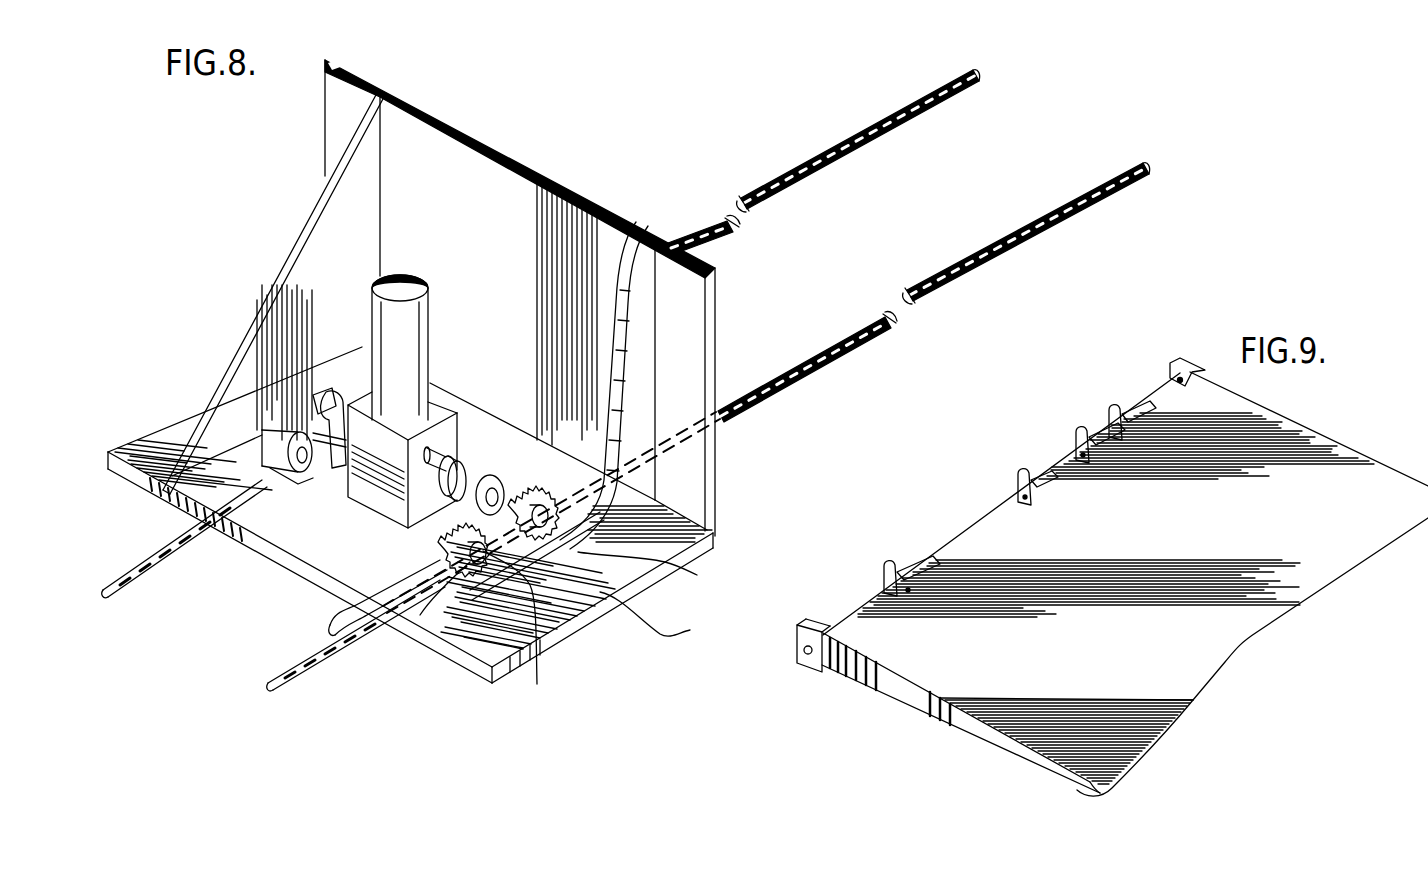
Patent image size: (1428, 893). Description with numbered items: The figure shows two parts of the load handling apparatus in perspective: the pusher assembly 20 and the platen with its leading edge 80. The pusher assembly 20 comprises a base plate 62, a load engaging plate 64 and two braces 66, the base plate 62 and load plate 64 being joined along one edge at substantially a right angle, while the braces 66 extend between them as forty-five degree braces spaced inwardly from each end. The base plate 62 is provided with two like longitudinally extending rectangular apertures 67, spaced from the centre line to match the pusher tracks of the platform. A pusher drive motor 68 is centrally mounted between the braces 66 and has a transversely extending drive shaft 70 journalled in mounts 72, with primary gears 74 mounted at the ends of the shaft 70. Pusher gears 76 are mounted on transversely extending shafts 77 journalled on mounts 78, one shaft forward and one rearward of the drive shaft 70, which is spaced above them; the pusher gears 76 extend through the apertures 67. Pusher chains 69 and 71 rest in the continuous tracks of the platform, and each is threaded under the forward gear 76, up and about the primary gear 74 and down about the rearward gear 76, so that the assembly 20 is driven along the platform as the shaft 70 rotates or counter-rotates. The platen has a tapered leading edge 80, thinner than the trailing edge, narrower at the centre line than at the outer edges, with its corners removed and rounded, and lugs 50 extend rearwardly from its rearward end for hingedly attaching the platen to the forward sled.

In FIG. 8, the pusher assembly 20 is at (462, 133).
In FIG. 8, the base plate 62 is at (583, 634).
In FIG. 8, the load engaging plate 64 is at (324, 128).
In FIG. 8, the braces 66 is at (285, 292).
In FIG. 8, the rectangular apertures 67 is at (313, 466).
In FIG. 8, the pusher drive motor 68 is at (430, 320).
In FIG. 8, the pusher chain 69 is at (135, 585).
In FIG. 8, the drive shaft 70 is at (463, 446).
In FIG. 8, the pusher chain 71 is at (272, 680).
In FIG. 8, the mounts 72 is at (478, 474).
In FIG. 8, the primary gears 74 is at (500, 482).
In FIG. 8, the pusher gears 76 is at (525, 492).
In FIG. 8, the shafts 77 is at (575, 635).
In FIG. 8, the mounts 78 is at (602, 602).
In FIG. 9, the lugs 50 is at (1172, 364).
In FIG. 9, the leading edge 80 is at (1183, 715).